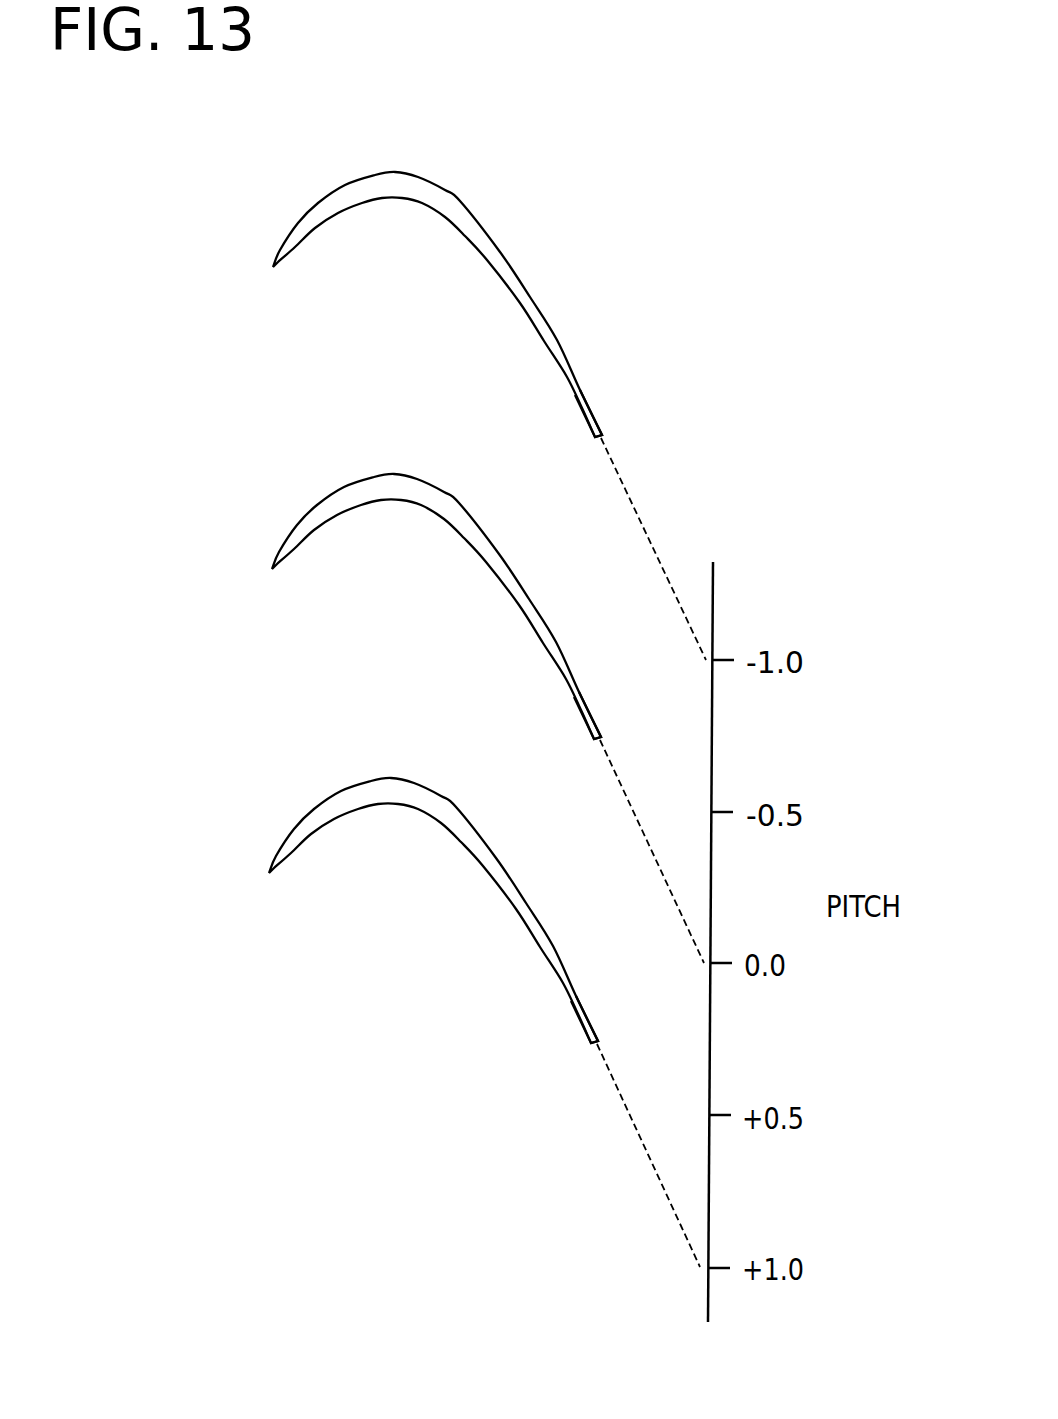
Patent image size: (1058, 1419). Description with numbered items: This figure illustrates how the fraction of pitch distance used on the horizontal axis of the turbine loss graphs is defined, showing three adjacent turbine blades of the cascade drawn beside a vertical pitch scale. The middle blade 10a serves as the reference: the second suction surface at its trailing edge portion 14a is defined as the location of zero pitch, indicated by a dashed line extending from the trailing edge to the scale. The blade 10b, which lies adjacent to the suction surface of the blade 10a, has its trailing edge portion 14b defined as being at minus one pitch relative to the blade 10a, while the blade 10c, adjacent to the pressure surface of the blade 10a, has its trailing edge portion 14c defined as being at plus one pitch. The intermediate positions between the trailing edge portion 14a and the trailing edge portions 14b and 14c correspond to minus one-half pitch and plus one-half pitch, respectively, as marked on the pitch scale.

The blade 10a is at (454, 504).
The blade 10b is at (455, 201).
The blade 10c is at (451, 808).
The trailing edge portion 14a is at (598, 741).
The trailing edge portion 14b is at (599, 438).
The trailing edge portion 14c is at (595, 1046).